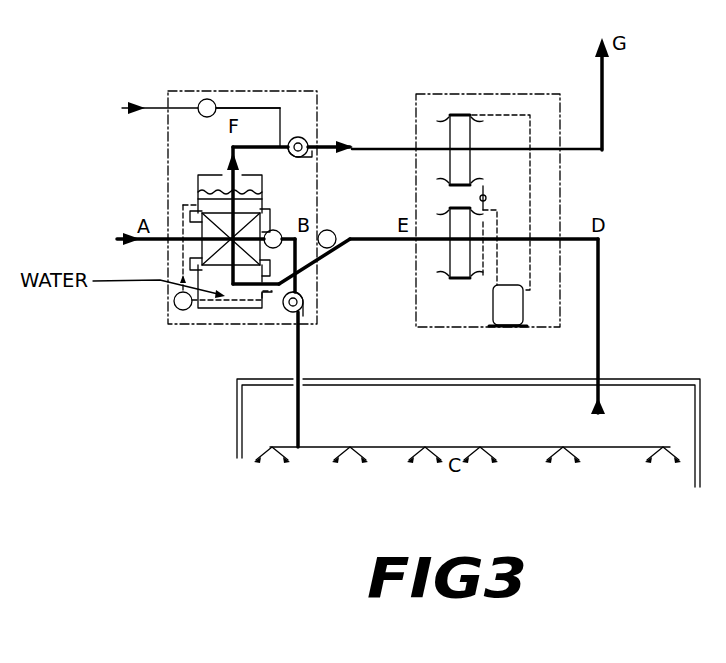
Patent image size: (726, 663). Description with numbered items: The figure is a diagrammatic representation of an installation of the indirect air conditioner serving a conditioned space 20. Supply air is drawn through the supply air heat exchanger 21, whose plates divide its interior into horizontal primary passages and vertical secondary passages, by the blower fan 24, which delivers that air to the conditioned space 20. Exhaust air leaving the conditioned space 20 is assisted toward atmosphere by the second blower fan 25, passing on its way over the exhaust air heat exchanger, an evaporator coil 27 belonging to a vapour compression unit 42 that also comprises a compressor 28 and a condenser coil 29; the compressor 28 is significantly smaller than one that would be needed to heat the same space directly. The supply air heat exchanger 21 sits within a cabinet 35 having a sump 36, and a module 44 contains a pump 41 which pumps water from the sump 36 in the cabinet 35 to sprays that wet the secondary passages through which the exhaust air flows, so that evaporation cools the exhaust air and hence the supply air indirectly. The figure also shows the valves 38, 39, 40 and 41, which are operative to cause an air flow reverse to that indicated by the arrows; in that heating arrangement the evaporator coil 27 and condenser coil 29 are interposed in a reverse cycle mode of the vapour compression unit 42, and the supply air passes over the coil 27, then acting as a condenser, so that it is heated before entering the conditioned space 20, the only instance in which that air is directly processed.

The conditioned space 20 is at (584, 492).
The supply air heat exchanger 21 is at (198, 252).
The blower fan 24 is at (288, 309).
The second blower fan 25 is at (300, 138).
The evaporator coil 27 is at (461, 260).
The compressor 28 is at (513, 298).
The condenser coil 29 is at (462, 136).
The cabinet 35 is at (184, 318).
The sump 36 is at (222, 308).
The valve 38 is at (207, 98).
The valve 39 is at (333, 232).
The valve 40 is at (279, 232).
The pump 41 is at (174, 301).
The vapour compression unit 42 is at (446, 93).
The module 44 is at (262, 90).